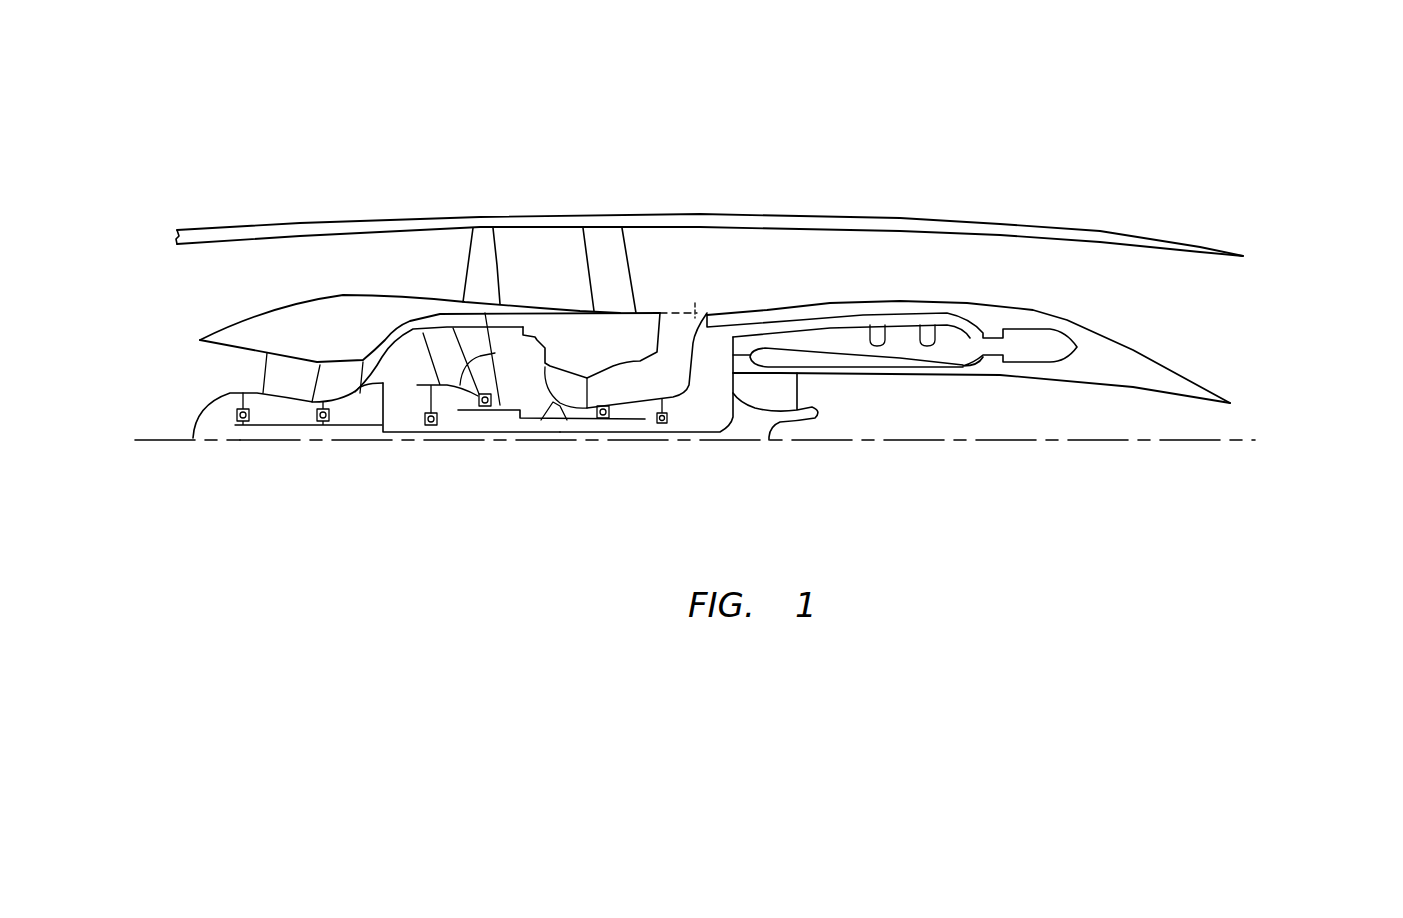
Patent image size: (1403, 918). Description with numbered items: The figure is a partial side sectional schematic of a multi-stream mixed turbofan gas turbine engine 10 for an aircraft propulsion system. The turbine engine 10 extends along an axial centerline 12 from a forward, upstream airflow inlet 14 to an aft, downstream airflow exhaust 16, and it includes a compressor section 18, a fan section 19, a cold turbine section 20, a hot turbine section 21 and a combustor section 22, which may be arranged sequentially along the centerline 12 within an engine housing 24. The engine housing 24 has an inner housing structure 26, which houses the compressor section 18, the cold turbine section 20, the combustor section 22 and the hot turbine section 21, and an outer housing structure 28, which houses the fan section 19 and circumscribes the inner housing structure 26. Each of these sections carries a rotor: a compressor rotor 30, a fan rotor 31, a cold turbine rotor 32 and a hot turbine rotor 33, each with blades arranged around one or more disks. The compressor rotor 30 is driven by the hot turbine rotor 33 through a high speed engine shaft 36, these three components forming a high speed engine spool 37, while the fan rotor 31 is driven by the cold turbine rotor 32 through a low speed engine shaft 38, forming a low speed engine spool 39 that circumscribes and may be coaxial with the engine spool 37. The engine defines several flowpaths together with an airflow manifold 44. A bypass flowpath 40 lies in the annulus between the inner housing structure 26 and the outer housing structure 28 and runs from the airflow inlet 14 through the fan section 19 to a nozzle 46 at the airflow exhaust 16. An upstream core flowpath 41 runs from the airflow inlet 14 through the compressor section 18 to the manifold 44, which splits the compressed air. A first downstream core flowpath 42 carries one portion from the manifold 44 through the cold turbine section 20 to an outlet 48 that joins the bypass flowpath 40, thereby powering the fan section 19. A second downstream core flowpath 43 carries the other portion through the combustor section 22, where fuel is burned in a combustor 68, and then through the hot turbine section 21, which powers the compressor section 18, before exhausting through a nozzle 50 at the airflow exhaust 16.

The turbine engine 10 is at (283, 138).
The axial centerline 12 is at (164, 450).
The airflow inlet 14 is at (163, 303).
The airflow exhaust 16 is at (1250, 341).
The compressor section 18 is at (370, 327).
The fan section 19 is at (480, 212).
The cold turbine section 20 is at (575, 358).
The hot turbine section 21 is at (777, 350).
The combustor section 22 is at (895, 316).
The engine housing 24 is at (1008, 216).
The inner housing structure 26 is at (1073, 320).
The outer housing structure 28 is at (1092, 230).
The compressor rotor 30 is at (380, 405).
The fan rotor 31 is at (457, 410).
The cold turbine rotor 32 is at (548, 402).
The hot turbine rotor 33 is at (720, 433).
The engine shaft 36 is at (393, 433).
The engine spool 37 is at (678, 438).
The engine shaft 38 is at (517, 418).
The engine spool 39 is at (583, 424).
The bypass flowpath 40 is at (387, 278).
The upstream core flowpath 41 is at (240, 376).
The first downstream core flowpath 42 is at (619, 390).
The second downstream core flowpath 43 is at (775, 321).
The airflow manifold 44 is at (521, 310).
The nozzle 46 is at (1234, 297).
The outlet 48 is at (700, 313).
The nozzle 50 is at (1227, 426).
The combustor 68 is at (873, 373).